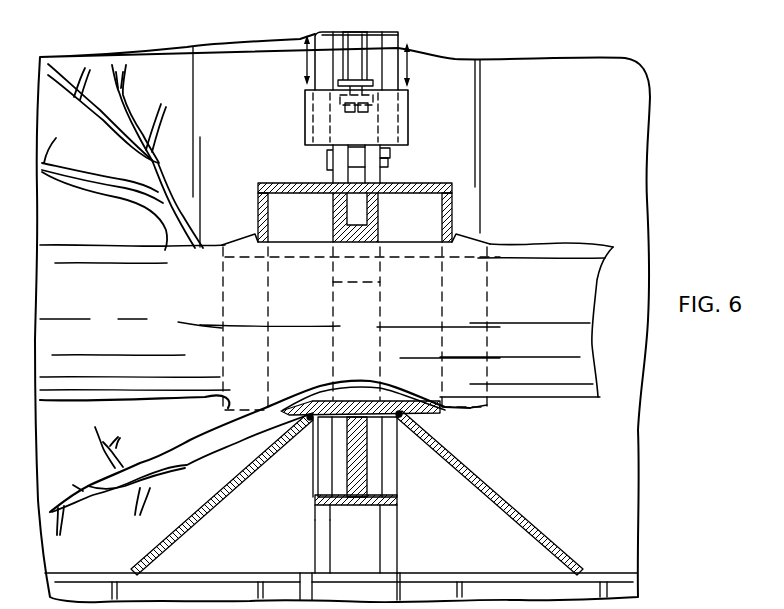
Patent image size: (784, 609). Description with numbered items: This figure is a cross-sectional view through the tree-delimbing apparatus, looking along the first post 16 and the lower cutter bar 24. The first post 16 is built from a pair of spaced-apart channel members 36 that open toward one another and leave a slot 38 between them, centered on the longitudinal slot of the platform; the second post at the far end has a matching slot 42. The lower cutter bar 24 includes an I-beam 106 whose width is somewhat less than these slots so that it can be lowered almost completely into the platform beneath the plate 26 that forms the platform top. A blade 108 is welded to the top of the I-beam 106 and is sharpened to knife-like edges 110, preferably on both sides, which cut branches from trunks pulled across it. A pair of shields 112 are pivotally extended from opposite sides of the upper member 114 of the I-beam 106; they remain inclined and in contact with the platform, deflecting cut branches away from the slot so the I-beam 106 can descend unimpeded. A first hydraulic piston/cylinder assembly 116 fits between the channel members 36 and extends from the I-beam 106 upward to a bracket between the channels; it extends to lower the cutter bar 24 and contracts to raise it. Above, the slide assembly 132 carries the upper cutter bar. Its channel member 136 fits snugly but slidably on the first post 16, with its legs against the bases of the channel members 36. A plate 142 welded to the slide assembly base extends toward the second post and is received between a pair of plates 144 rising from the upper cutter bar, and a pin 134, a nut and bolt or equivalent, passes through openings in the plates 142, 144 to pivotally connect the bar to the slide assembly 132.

The first post 16 is at (397, 29).
The channel members 36 is at (316, 33).
The slot 42 is at (356, 16).
The first hydraulic piston/cylinder assembly 116 is at (368, 63).
The slide assembly 132 is at (414, 117).
The channel member 136 is at (408, 135).
The pin 134 is at (327, 161).
The plate 142 is at (386, 156).
The plates 144 is at (386, 166).
The blade 108 is at (381, 393).
The knife-like edges 110 is at (432, 412).
The upper member 114 is at (312, 422).
The shields 112 is at (508, 507).
The lower cutter bar 24 is at (320, 510).
The I-beam 106 is at (367, 505).
The slot 38 is at (357, 533).
The plate 26 is at (603, 577).